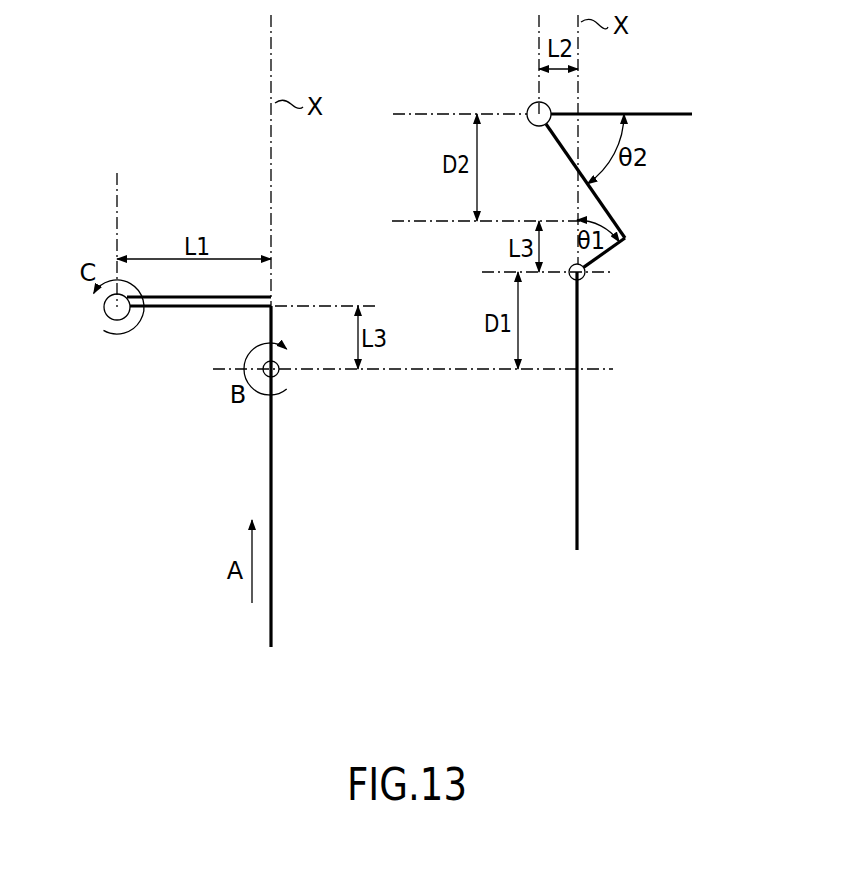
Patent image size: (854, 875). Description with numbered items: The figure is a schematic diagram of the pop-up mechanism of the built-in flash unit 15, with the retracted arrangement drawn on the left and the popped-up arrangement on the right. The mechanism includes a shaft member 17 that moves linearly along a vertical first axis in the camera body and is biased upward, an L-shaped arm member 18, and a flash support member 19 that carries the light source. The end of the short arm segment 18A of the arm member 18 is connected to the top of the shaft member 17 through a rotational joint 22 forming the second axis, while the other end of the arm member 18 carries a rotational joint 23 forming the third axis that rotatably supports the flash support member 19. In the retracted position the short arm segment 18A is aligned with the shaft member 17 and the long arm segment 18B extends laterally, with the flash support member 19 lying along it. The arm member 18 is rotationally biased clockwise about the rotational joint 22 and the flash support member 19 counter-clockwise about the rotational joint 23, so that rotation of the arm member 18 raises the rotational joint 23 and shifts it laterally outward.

The built-in flash unit 15 is at (205, 609).
The shaft member 17 is at (273, 478).
The arm member 18 is at (408, 259).
The short arm segment 18A is at (277, 318).
The long arm segment 18B is at (215, 312).
The flash support member 19 is at (250, 297).
The rotational joint 22 is at (280, 372).
The rotational joint 23 is at (106, 312).